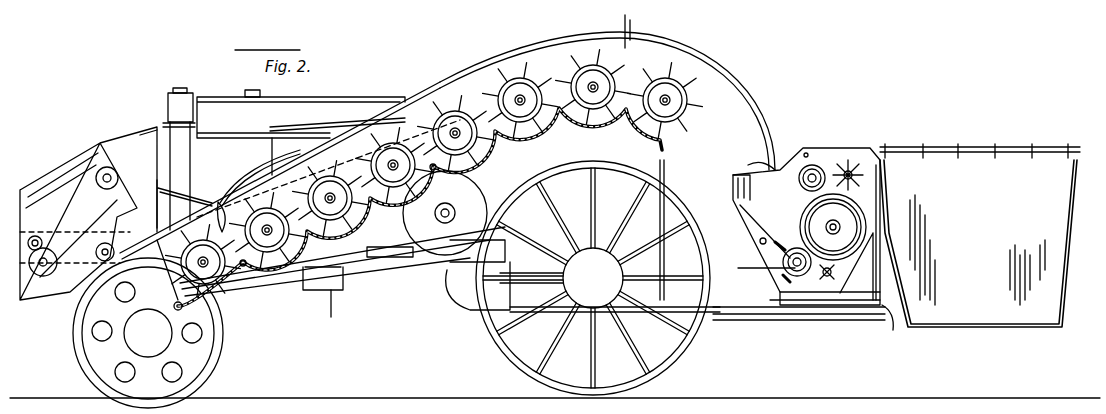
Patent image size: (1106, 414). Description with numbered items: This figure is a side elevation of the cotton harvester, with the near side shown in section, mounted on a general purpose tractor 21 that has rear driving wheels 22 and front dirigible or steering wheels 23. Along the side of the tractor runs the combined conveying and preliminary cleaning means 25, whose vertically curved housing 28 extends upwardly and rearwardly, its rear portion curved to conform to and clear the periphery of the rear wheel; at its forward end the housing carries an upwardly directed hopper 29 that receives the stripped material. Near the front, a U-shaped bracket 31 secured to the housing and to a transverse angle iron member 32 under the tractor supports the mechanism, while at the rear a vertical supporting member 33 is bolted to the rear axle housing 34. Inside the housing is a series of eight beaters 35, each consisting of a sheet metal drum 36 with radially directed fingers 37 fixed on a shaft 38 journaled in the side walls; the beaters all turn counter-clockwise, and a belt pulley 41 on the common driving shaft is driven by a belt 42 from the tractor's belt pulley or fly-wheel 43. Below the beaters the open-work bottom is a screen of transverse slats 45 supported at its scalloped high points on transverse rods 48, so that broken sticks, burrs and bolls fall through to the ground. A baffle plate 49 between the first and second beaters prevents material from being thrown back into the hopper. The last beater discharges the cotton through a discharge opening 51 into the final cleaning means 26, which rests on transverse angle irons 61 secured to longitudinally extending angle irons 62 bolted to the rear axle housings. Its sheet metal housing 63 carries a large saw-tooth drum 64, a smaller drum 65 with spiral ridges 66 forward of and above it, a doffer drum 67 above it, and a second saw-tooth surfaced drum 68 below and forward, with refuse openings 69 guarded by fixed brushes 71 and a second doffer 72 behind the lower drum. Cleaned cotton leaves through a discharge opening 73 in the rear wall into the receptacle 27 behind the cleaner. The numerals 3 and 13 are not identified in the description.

The conveyor housing 3 is at (458, 139).
The housing top 13 is at (638, 31).
The general purpose tractor 21 is at (358, 98).
The rear driving wheels 22 is at (586, 278).
The front dirigible or steering wheels 23 is at (216, 375).
The combined conveying and preliminary cleaning means 25 is at (405, 90).
The final cleaning means 26 is at (815, 234).
The receptacle or container 27 is at (1005, 165).
The vertically curved housing 28 is at (553, 47).
The hopper 29 is at (117, 143).
The U-shaped bracket 31 is at (343, 290).
The transverse angle iron member 32 is at (345, 311).
The vertical supporting member 33 is at (666, 172).
The rear axle housing 34 is at (625, 215).
The beaters 35 is at (553, 67).
The sheet metal drum 36 is at (690, 98).
The fingers 37 is at (705, 125).
The shaft 38 is at (170, 250).
The belt pulley 41 is at (244, 176).
The belt 42 is at (342, 261).
The belt pulley or fly-wheel of the tractor 43 is at (390, 252).
The transverse slats 45 is at (475, 200).
The transverse rods 48 is at (172, 305).
The baffle plate 49 is at (215, 200).
The discharge opening 51 is at (760, 150).
The transverse angle irons 61 is at (775, 295).
The longitudinally extending angle irons 62 is at (745, 322).
The sheet metal housing 63 is at (857, 266).
The large drum 64 is at (805, 215).
The smaller drum 65 is at (800, 180).
The spiral ridges 66 is at (808, 185).
The doffer drum 67 is at (850, 165).
The second saw-tooth surfaced drum 68 is at (783, 262).
The refuse openings 69 is at (782, 308).
The fixed brushes 71 is at (772, 243).
The second doffer 72 is at (838, 268).
The discharge opening 73 is at (878, 200).